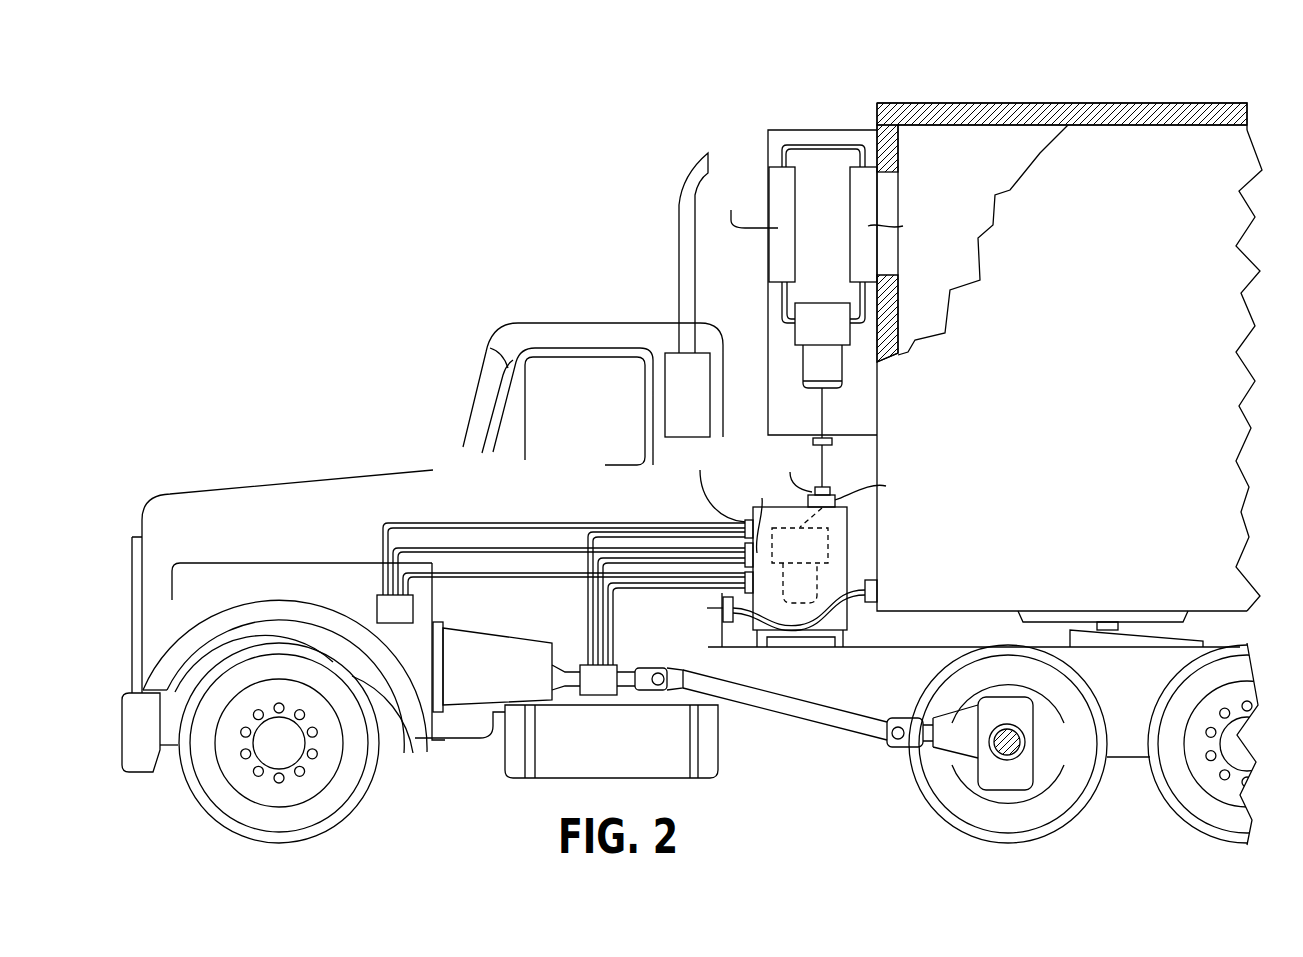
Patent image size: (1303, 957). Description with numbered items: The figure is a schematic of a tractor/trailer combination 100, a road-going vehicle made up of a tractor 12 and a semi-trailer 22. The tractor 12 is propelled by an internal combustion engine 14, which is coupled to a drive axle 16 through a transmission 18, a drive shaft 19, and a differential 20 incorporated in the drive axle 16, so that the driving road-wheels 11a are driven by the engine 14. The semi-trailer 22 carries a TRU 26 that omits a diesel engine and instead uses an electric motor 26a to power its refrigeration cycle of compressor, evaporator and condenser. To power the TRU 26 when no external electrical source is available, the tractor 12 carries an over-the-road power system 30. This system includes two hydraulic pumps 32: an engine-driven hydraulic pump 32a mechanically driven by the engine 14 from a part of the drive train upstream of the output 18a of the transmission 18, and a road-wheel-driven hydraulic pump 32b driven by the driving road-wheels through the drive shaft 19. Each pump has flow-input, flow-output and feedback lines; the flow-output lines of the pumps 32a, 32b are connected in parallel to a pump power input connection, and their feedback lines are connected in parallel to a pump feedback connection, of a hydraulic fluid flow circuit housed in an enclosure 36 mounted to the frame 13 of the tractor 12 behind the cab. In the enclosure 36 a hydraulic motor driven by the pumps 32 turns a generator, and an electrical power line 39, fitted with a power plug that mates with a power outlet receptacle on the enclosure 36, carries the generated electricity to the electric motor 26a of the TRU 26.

The tractor/trailer combination 100 is at (315, 148).
The tractor 12 is at (385, 445).
The engine 14 is at (219, 592).
The transmission 18 is at (486, 680).
The transmission output 18a is at (570, 672).
The drive shaft 19 is at (627, 695).
The differential 20 is at (957, 760).
The drive axle 16 is at (1026, 742).
The driving road-wheels 11a is at (945, 830).
The frame 13 is at (1137, 704).
The hydraulic pumps 32 is at (398, 625).
The engine-driven hydraulic pump 32a is at (377, 605).
The road-wheel-driven hydraulic pump 32b is at (598, 695).
The over-the-road power system 30 is at (858, 525).
The enclosure 36 is at (850, 545).
The electrical power line 39 is at (824, 470).
The semi-trailer 22 is at (1110, 92).
The TRU 26 is at (822, 130).
The electric motor 26a is at (844, 375).